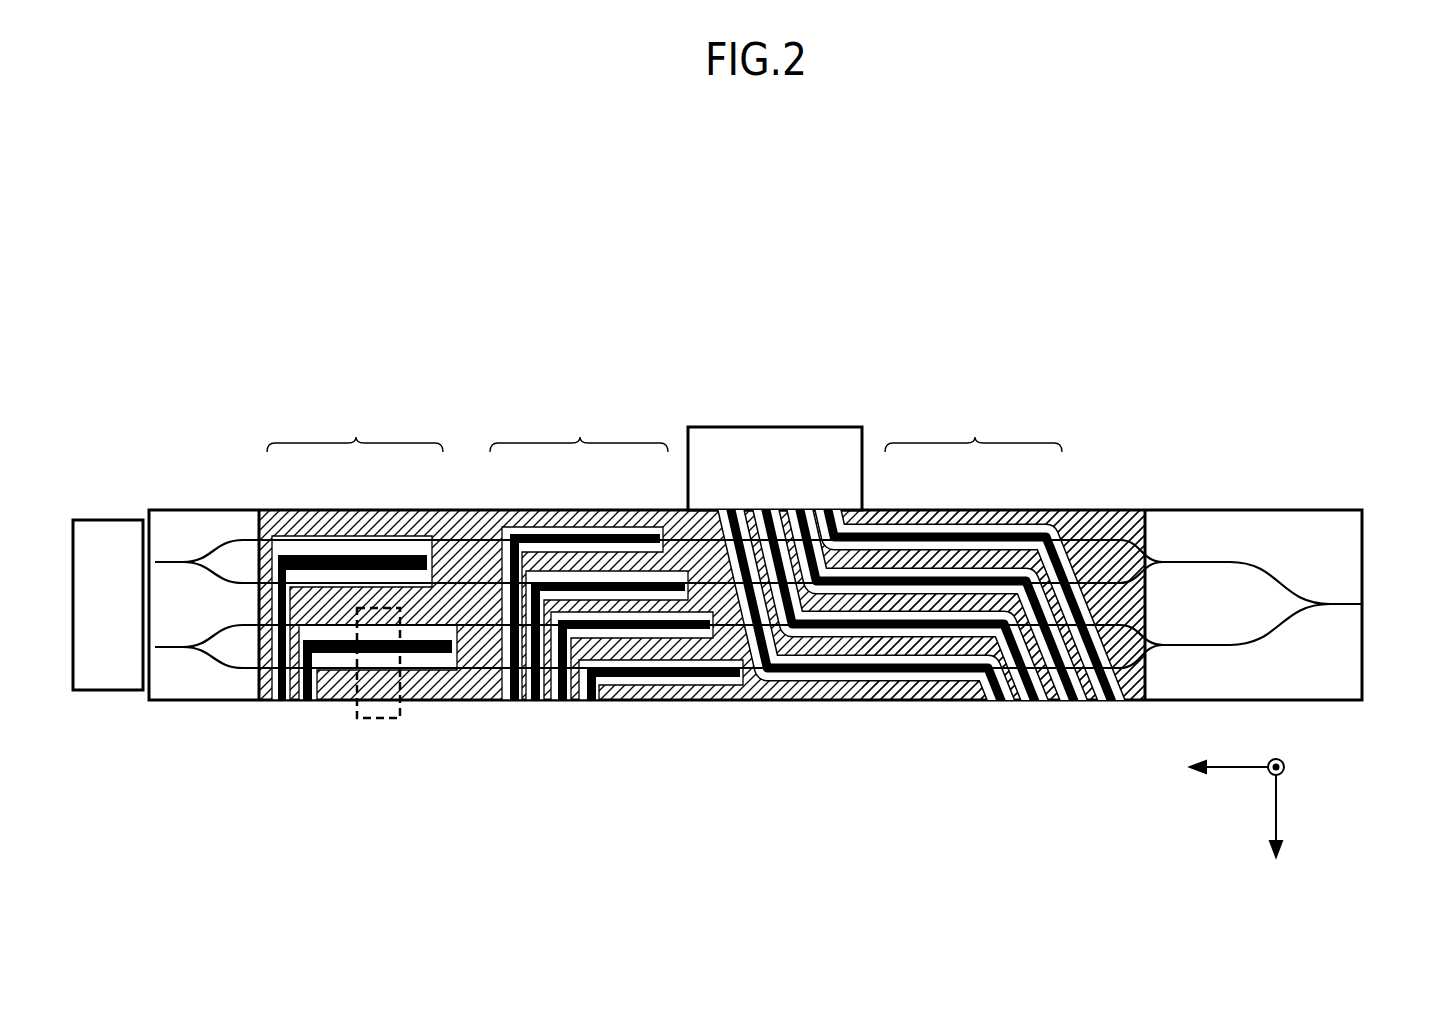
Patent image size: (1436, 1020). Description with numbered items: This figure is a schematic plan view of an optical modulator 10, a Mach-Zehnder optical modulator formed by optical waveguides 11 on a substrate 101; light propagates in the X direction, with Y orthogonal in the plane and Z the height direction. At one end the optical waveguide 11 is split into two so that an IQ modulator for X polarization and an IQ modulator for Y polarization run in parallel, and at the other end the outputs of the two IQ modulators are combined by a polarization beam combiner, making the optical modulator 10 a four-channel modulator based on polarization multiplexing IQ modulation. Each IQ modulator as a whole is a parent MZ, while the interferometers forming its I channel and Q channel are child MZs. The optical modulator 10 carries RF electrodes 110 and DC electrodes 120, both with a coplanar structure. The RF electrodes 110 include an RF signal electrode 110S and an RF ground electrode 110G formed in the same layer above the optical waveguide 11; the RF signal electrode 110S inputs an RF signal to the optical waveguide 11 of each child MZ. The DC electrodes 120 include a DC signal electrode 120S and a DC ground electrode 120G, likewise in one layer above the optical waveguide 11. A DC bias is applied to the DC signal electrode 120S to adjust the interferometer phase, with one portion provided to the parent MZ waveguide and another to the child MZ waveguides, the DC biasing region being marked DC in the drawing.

The optical modulator 10 is at (1337, 206).
The optical waveguide 11 is at (213, 660).
The substrate 101 is at (1363, 548).
The RF electrodes 110 is at (937, 557).
The RF signal electrode 110S is at (922, 530).
The RF ground electrode 110G is at (989, 560).
The DC electrodes 120 is at (702, 554).
The DC signal electrode 120S is at (303, 560).
The DC ground electrode 120G is at (386, 527).
The DC electrode region DC is at (375, 722).